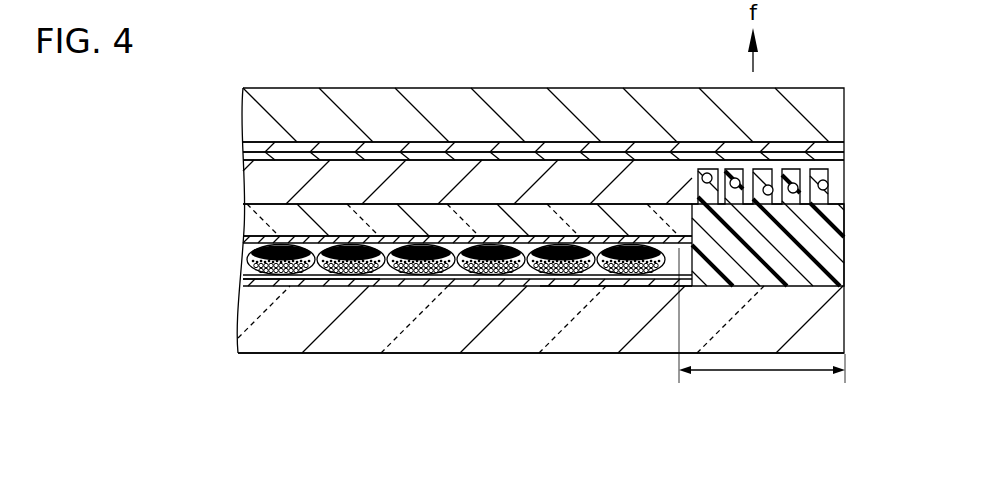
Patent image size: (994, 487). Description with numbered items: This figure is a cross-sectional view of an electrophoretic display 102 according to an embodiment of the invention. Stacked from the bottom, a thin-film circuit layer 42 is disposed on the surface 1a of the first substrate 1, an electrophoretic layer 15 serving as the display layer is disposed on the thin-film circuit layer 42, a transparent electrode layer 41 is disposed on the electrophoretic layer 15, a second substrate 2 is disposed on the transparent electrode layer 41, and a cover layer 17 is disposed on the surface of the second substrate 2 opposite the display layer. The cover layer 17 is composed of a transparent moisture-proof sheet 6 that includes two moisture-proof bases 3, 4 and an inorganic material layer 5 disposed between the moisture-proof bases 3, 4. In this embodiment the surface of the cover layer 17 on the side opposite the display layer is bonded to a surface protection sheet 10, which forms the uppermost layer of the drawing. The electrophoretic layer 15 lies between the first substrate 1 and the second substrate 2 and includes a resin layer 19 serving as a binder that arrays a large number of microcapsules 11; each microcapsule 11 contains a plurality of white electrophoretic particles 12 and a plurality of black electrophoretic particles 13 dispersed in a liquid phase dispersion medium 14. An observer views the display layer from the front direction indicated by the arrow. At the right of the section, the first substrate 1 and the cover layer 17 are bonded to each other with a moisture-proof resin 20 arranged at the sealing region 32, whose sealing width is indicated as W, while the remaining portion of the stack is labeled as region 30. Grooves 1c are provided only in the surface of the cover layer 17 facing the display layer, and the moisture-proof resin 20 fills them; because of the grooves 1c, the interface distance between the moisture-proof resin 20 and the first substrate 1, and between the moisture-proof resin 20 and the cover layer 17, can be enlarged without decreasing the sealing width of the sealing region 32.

The first substrate 1 is at (243, 342).
The surface of the first substrate 1a is at (607, 288).
The grooves 1c is at (735, 178).
The second substrate 2 is at (243, 225).
The moisture-proof base 3 is at (245, 185).
The moisture-proof base 4 is at (242, 149).
The inorganic material layer 5 is at (242, 160).
The transparent moisture-proof sheet 6 is at (543, 156).
The surface protection sheet 10 is at (248, 122).
The microcapsules 11 is at (262, 276).
The white electrophoretic particles 12 is at (243, 283).
The black electrophoretic particles 13 is at (258, 258).
The liquid phase dispersion medium 14 is at (267, 297).
The electrophoretic layer 15 is at (130, 348).
The cover layer 17 is at (165, 190).
The resin layer 19 is at (243, 240).
The moisture-proof resin 20 is at (848, 240).
The display region 30 is at (675, 393).
The sealing region 32 is at (681, 393).
The transparent electrode layer 41 is at (388, 243).
The thin-film circuit layer 42 is at (378, 281).
The electrophoretic display 102 is at (834, 68).